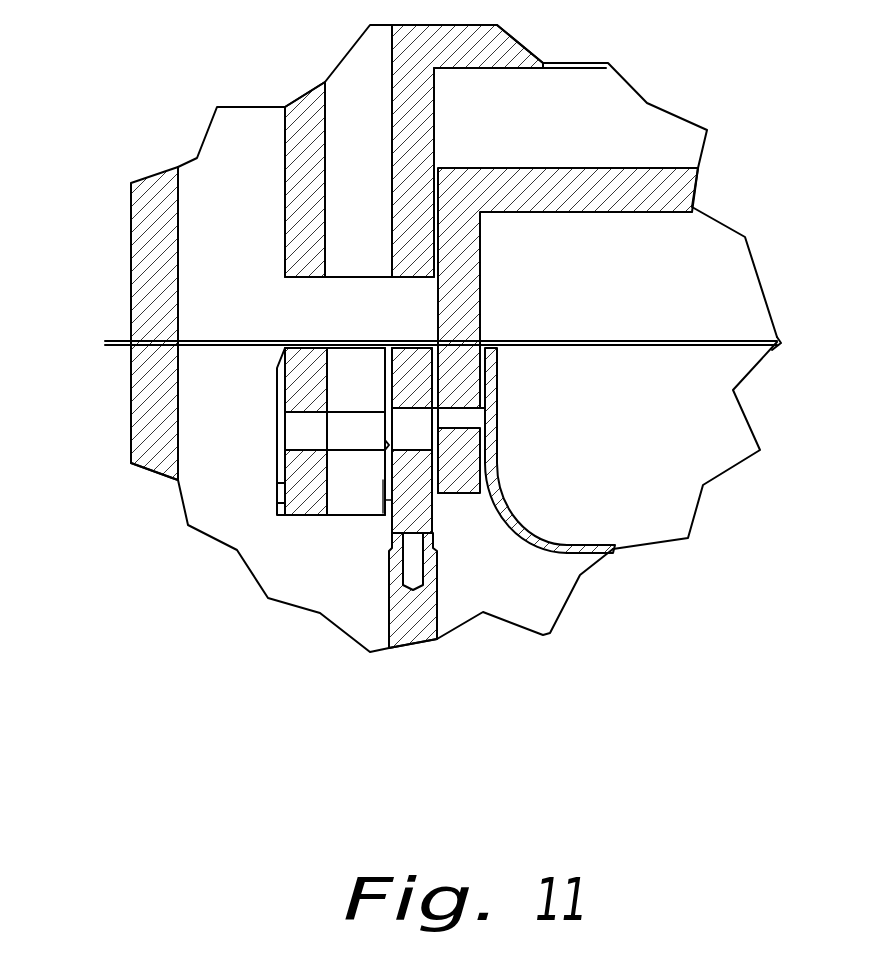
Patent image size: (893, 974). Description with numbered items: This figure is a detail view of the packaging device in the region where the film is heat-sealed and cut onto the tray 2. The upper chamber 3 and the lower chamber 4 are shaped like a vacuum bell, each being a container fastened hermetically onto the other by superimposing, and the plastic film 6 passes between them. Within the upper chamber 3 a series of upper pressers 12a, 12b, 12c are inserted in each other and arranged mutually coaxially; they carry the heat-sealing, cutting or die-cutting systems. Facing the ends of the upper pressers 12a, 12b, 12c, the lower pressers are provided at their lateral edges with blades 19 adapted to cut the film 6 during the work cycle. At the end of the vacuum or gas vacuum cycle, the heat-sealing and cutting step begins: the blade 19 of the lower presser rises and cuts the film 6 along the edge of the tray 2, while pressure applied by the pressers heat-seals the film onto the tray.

The tray 2 is at (627, 475).
The upper chamber 3 is at (124, 264).
The lower chamber 4 is at (117, 412).
The film 6 is at (115, 341).
The upper presser 12a is at (305, 182).
The upper presser 12b is at (412, 131).
The upper presser 12c is at (463, 272).
The blade 19 is at (268, 377).